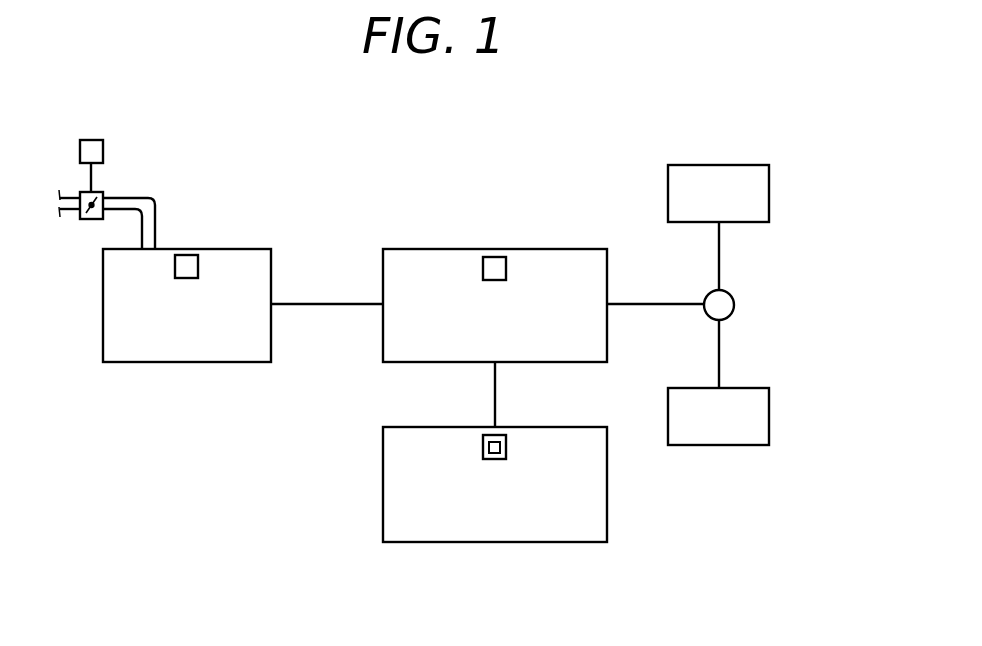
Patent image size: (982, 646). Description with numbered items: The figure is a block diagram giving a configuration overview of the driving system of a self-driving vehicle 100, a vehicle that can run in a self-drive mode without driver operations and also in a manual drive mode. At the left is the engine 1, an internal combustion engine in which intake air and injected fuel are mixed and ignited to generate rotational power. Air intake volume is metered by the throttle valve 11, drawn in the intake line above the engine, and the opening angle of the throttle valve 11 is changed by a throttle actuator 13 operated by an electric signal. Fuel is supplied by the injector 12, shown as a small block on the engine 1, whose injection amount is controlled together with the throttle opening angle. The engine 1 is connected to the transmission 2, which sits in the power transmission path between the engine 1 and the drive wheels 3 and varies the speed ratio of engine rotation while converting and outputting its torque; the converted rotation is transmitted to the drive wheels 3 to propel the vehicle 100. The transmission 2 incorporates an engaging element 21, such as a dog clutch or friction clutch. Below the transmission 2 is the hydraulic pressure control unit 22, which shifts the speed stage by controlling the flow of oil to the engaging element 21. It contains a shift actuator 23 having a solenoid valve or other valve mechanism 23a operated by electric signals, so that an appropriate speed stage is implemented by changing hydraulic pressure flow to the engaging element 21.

The self-driving vehicle 100 is at (537, 123).
The engine 1 is at (236, 249).
The throttle valve 11 is at (84, 191).
The injector 12 is at (175, 266).
The throttle actuator 13 is at (104, 152).
The transmission 2 is at (560, 249).
The engaging element 21 is at (496, 257).
The hydraulic pressure control unit 22 is at (588, 543).
The shift actuator 23 is at (483, 444).
The valve mechanism 23a is at (500, 440).
The drive wheels 3 is at (746, 165).